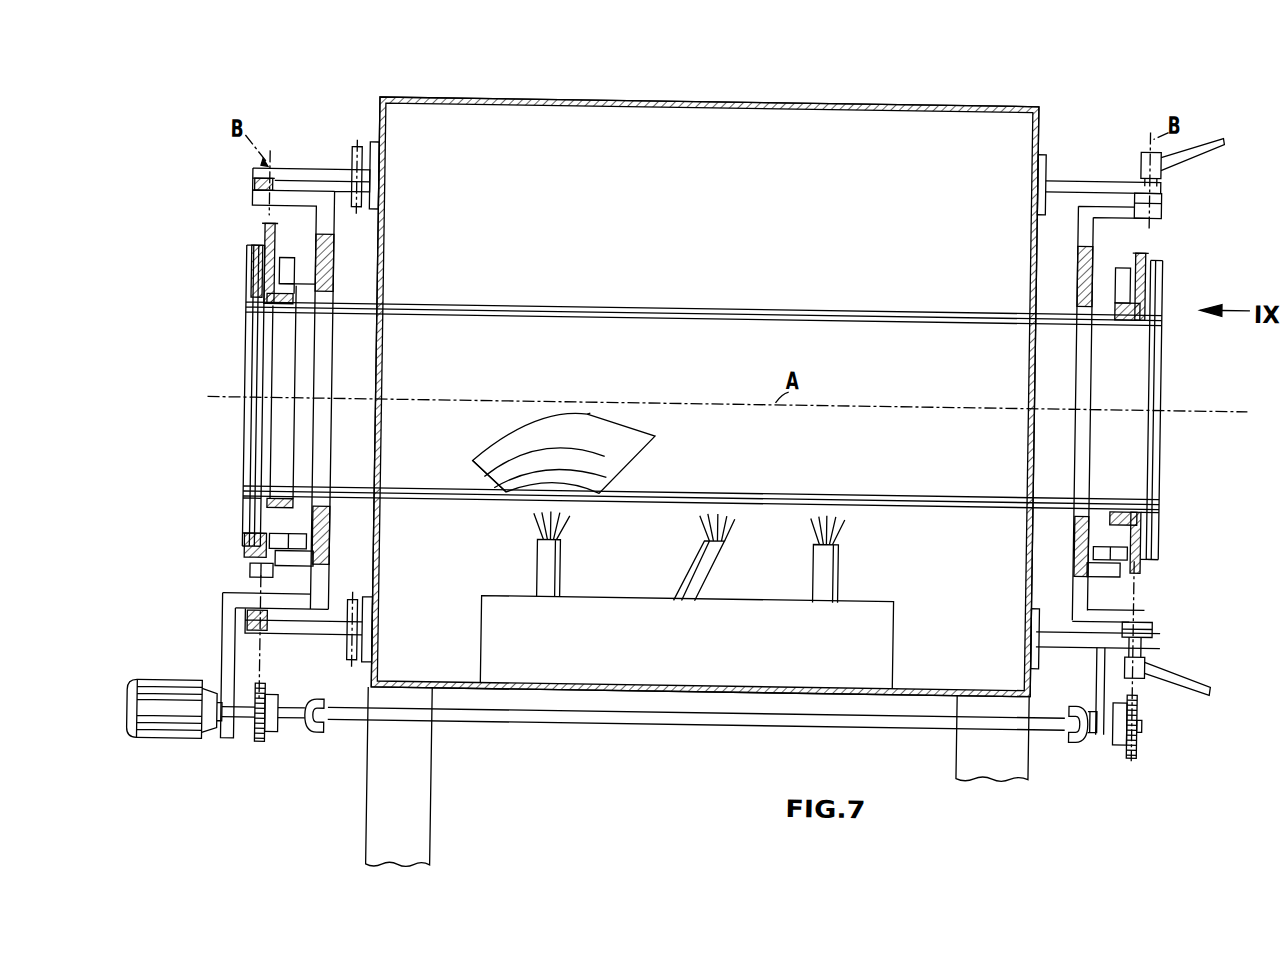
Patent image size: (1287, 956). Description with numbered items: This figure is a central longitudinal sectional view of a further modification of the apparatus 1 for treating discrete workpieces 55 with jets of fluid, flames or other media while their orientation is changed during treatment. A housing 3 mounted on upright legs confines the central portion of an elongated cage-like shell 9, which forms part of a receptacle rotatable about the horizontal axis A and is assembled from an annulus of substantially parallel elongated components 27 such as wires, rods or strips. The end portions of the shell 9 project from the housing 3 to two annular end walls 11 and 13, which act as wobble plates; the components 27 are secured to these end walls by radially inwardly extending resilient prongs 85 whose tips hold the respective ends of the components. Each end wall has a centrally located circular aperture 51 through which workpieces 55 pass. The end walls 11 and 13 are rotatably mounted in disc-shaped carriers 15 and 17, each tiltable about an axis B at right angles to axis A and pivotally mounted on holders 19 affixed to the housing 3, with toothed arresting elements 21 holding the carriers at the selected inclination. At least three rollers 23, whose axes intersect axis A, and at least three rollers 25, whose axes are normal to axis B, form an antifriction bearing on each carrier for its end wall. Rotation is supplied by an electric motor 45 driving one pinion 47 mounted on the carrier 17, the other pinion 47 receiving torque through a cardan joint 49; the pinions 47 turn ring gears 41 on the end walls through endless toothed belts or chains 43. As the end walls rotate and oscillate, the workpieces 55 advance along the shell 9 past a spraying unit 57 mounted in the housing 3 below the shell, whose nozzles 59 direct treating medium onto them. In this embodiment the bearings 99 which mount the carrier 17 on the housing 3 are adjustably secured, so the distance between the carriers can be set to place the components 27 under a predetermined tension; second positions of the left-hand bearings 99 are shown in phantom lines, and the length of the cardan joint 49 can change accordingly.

The apparatus 1 is at (870, 188).
The housing 3 is at (951, 103).
The cage-like shell 9 is at (789, 302).
The end wall 11 is at (1174, 559).
The end wall 13 is at (240, 543).
The carrier 15 is at (1099, 249).
The carrier 17 is at (324, 253).
The holder 19 is at (311, 170).
The arresting element 21 is at (1165, 196).
The roller 23 is at (284, 534).
The roller 25 is at (287, 272).
The elongated component 27 is at (647, 306).
The ring gear 41 is at (269, 231).
The endless toothed belt or chain 43 is at (258, 658).
The electric motor 45 is at (186, 744).
The pinion 47 is at (270, 746).
The cardan joint 49 is at (719, 720).
The aperture 51 is at (234, 422).
The workpiece 55 is at (650, 451).
The spraying unit 57 is at (505, 650).
The nozzle 59 is at (569, 565).
The resilient prong 85 is at (253, 354).
The bearing 99 is at (380, 170).